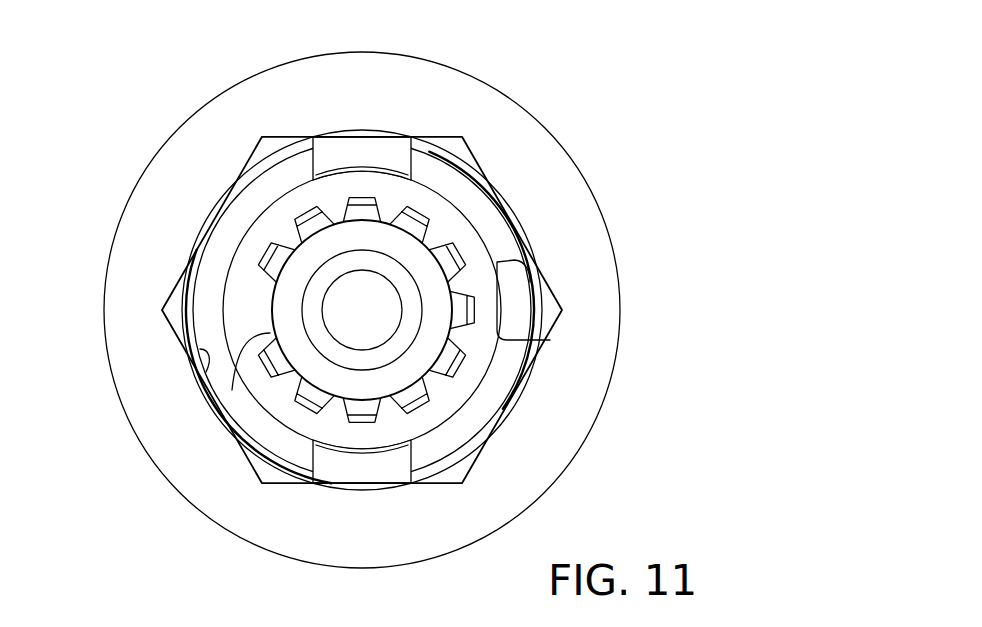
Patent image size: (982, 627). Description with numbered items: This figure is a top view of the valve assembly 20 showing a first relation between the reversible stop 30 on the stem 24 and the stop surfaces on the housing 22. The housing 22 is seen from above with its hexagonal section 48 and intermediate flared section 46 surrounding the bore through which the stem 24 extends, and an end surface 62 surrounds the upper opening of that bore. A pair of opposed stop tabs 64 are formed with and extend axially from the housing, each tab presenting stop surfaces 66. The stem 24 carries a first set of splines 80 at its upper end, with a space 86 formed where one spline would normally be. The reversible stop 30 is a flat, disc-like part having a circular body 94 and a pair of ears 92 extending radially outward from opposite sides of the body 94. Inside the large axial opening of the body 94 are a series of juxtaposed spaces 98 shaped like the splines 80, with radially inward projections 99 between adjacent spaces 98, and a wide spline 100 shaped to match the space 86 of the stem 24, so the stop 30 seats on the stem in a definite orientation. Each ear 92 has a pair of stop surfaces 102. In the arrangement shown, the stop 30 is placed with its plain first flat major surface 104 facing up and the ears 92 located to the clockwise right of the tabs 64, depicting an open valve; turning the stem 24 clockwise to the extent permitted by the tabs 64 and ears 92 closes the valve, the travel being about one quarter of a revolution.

The valve assembly 20 is at (604, 114).
The housing 22 is at (618, 221).
The stem 24 is at (452, 257).
The reversible stop 30 is at (452, 143).
The intermediate flared section 46 is at (604, 386).
The hexagonal section 48 is at (550, 302).
The end surface 62 is at (285, 242).
The stop tabs 64 is at (343, 153).
The stop surfaces 66 is at (284, 240).
The first set of splines 80 is at (422, 187).
The space 86 is at (272, 306).
The ears 92 is at (246, 433).
The circular body 94 is at (503, 387).
The spaces 98 is at (548, 340).
The radially inward projections 99 is at (241, 212).
The wide spline 100 is at (262, 372).
The stop surfaces 102 is at (412, 172).
The first flat major surface 104 is at (478, 358).